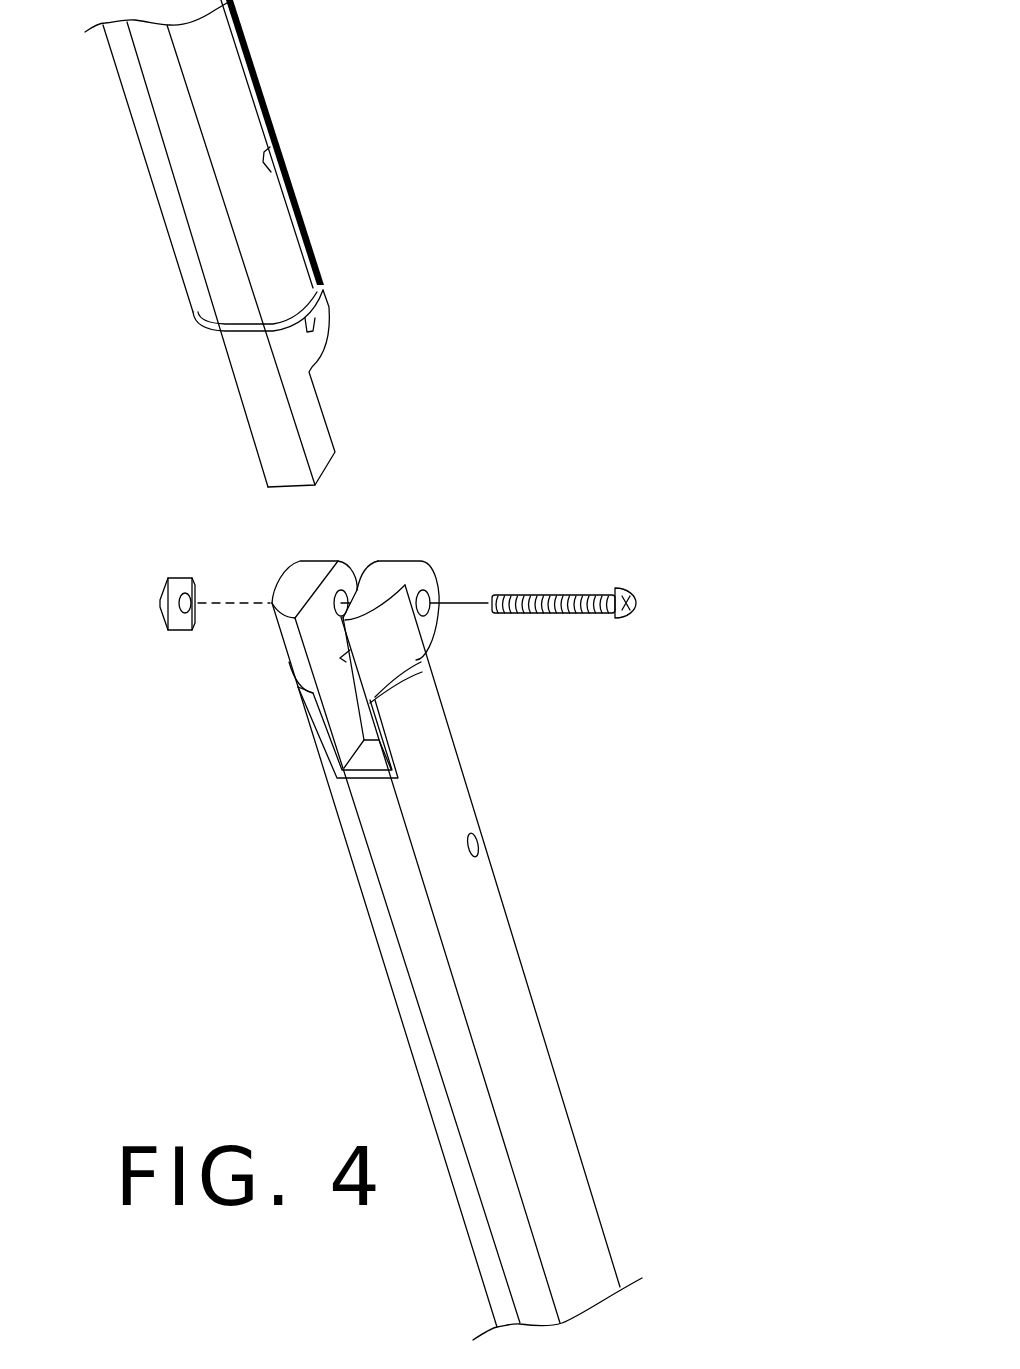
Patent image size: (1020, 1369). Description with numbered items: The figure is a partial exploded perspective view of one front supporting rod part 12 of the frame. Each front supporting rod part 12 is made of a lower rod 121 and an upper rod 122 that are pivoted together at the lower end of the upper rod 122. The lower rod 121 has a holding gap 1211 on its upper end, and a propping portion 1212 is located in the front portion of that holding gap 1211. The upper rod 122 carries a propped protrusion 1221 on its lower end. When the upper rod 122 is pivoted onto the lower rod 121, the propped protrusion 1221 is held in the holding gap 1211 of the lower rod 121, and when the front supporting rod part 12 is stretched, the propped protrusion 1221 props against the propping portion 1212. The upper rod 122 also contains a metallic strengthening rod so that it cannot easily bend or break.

The front supporting rod part 12 is at (488, 537).
The lower rod 121 is at (507, 1037).
The holding gap 1211 is at (370, 748).
The propping portion 1212 is at (360, 695).
The upper rod 122 is at (233, 88).
The propped protrusion 1221 is at (313, 430).